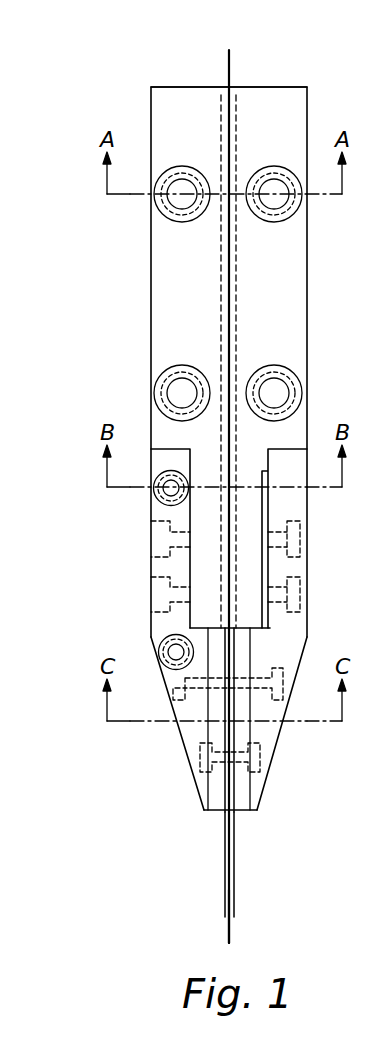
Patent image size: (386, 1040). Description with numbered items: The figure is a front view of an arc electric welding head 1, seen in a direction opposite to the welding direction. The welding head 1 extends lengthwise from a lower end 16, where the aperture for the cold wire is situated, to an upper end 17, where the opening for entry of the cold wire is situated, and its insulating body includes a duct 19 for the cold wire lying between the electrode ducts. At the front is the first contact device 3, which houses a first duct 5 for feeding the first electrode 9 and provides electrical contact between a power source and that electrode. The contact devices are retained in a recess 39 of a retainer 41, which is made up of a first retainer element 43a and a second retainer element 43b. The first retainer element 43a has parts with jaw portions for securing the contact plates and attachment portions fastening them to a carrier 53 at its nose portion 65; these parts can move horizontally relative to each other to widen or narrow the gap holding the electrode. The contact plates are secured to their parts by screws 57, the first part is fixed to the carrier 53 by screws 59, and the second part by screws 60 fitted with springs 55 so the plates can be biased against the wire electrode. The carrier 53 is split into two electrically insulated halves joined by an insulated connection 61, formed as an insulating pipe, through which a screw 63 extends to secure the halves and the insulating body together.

The arc electric welding head 1 is at (103, 282).
The first contact device 3 is at (218, 793).
The first duct 5 is at (228, 812).
The first electrode 9 is at (233, 857).
The lower end 16 is at (203, 812).
The upper end 17 is at (283, 87).
The duct for the cold wire 19 is at (235, 890).
The recess 39 is at (250, 655).
The retainer 41 is at (280, 461).
The first retainer element 43a is at (163, 513).
The second retainer element 43b is at (295, 472).
The carrier 53 is at (166, 114).
The springs 55 is at (292, 553).
The screws 57 is at (283, 687).
The screws 59 is at (157, 540).
The screws 60 is at (305, 538).
The insulated connection 61 is at (167, 214).
The screw 63 is at (307, 496).
The nose portion 65 is at (203, 583).